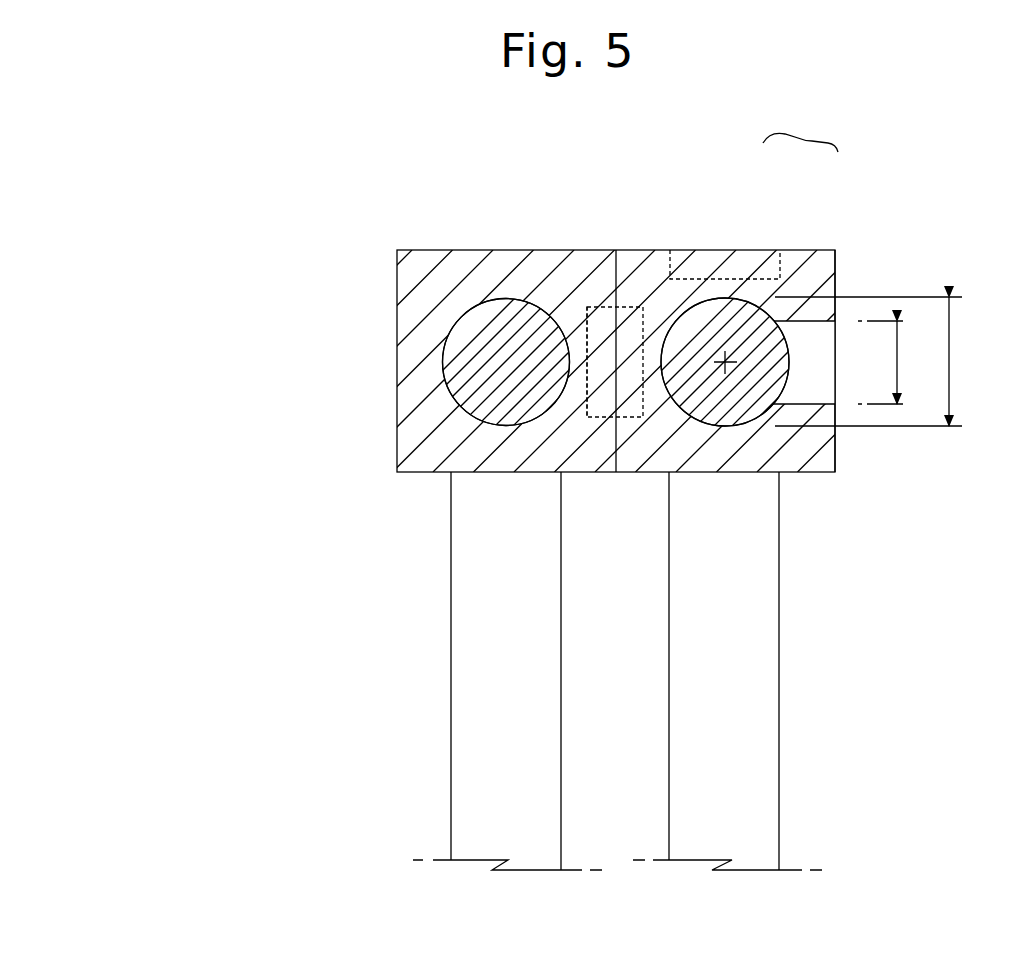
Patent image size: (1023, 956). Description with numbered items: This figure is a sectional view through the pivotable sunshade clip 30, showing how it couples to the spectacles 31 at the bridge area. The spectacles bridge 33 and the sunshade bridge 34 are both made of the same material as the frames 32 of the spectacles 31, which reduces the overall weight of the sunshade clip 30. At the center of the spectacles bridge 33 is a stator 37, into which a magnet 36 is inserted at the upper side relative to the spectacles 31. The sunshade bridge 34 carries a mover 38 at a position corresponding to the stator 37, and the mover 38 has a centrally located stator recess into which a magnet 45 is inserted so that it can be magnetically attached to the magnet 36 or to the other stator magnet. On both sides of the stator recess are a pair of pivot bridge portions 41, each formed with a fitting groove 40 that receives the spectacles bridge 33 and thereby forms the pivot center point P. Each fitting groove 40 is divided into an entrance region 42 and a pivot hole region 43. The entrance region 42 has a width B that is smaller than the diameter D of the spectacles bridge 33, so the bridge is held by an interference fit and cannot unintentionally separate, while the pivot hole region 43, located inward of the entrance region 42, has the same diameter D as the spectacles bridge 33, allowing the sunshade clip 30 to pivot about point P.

The pivotable sunshade clip 30 is at (385, 622).
The spectacles 31 is at (792, 594).
The frames 32 is at (772, 653).
The spectacles bridge 33 is at (728, 412).
The sunshade bridge 34 is at (500, 412).
The magnet 36 is at (628, 307).
The stator 37 is at (696, 252).
The mover 38 is at (355, 367).
The fitting grooves 40 is at (800, 130).
The pivot bridge portions 41 is at (847, 258).
The entrance region 42 is at (798, 328).
The pivot hole region 43 is at (732, 300).
The magnet 45 is at (597, 307).
The pivot center point P is at (693, 413).
The width B is at (891, 362).
The diameter D is at (876, 361).